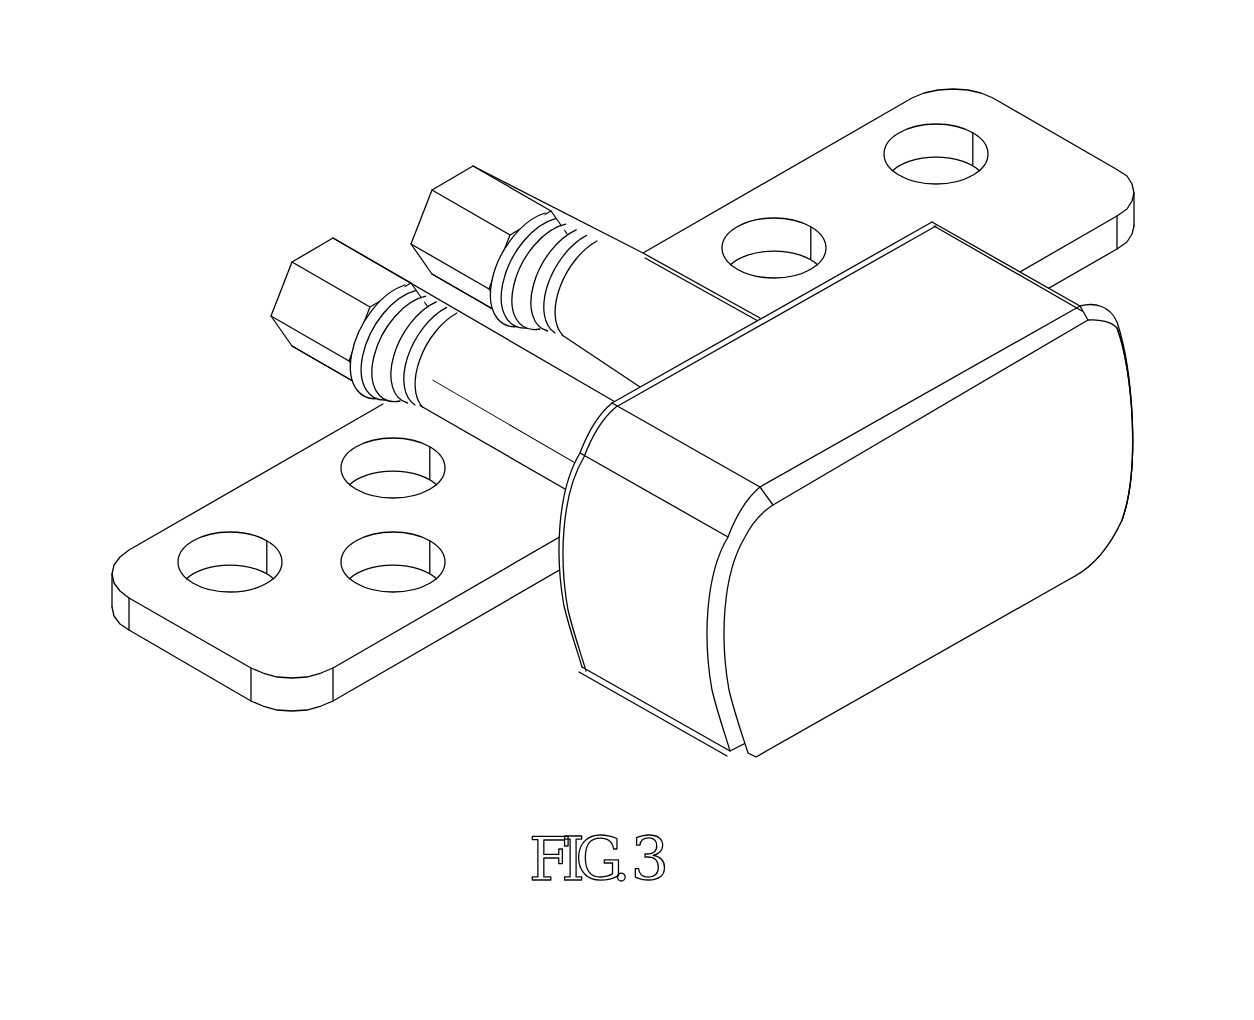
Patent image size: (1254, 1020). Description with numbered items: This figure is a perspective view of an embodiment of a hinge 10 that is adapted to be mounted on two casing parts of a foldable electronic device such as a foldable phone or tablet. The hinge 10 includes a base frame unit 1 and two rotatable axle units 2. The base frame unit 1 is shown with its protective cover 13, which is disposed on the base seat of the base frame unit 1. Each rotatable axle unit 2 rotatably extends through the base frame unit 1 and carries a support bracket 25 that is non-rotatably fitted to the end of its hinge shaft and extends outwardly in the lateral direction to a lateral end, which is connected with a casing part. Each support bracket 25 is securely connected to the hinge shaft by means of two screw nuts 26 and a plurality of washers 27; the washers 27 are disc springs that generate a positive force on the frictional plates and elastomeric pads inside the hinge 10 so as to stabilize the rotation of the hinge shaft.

The base frame unit 1 is at (779, 490).
The hinge 10 is at (975, 560).
The protective cover 13 is at (1135, 450).
The rotatable axle unit 2 is at (238, 485).
The support bracket 25 is at (242, 620).
The screw nut 26 is at (377, 283).
The washer 27 is at (356, 357).